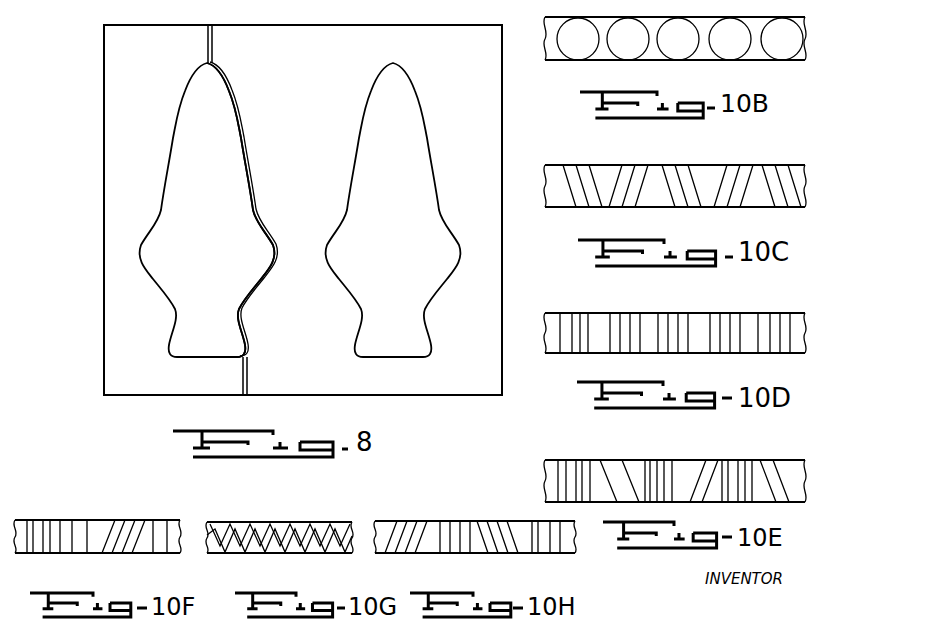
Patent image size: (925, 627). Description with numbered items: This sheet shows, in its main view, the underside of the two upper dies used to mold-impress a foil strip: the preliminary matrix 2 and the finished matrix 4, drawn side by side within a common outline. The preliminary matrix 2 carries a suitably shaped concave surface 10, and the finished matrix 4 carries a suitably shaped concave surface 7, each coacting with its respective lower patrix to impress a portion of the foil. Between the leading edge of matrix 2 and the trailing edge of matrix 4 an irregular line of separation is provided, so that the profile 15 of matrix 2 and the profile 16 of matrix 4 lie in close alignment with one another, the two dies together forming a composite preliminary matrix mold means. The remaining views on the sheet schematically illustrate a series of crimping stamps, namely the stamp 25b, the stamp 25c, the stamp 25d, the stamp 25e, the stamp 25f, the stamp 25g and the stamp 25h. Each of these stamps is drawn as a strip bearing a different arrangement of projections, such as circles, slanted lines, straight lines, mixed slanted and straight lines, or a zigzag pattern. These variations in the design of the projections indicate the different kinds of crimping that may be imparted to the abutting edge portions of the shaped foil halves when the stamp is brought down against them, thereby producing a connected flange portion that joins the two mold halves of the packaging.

In FIG. 8, the preliminary matrix 2 is at (102, 216).
In FIG. 8, the finished matrix 4 is at (308, 165).
In FIG. 8, the concave surface 7 is at (398, 164).
In FIG. 8, the concave surface 10 is at (176, 139).
In FIG. 8, the profile 15 is at (255, 139).
In FIG. 8, the profile 16 is at (243, 104).
In FIG. 10B, the stamp 25b is at (753, 53).
In FIG. 10C, the stamp 25c is at (755, 198).
In FIG. 10D, the stamp 25d is at (752, 343).
In FIG. 10E, the stamp 25e is at (753, 490).
In FIG. 10F, the stamp 25f is at (143, 547).
In FIG. 10G, the stamp 25g is at (317, 545).
In FIG. 10H, the stamp 25h is at (537, 545).